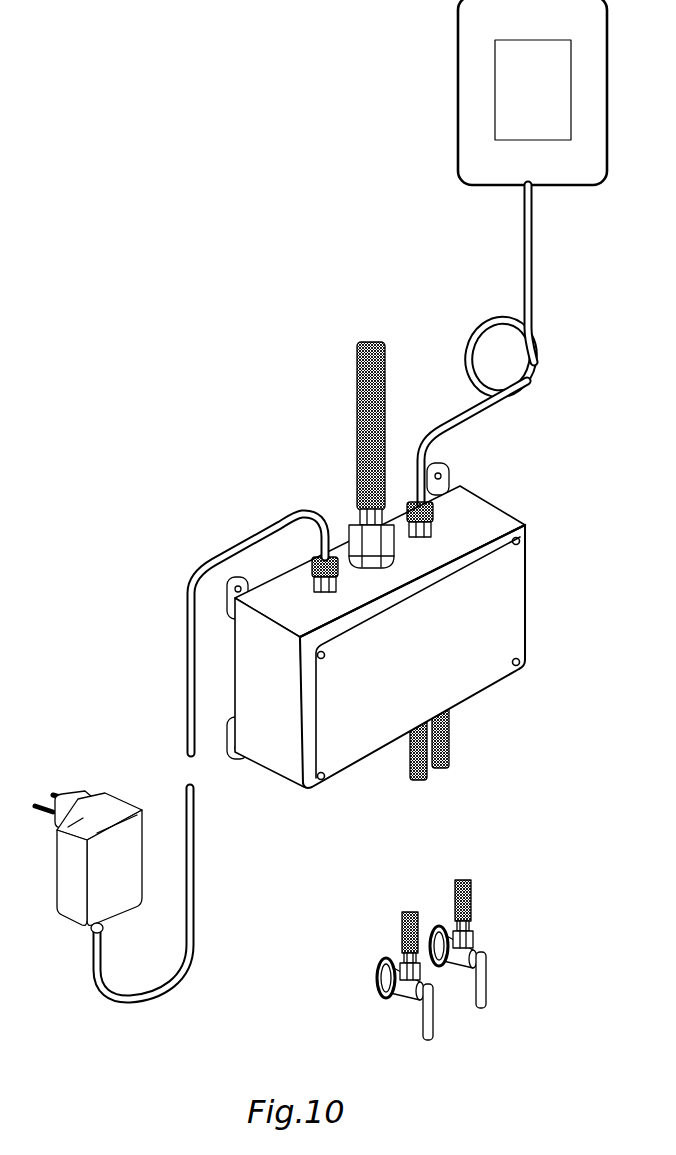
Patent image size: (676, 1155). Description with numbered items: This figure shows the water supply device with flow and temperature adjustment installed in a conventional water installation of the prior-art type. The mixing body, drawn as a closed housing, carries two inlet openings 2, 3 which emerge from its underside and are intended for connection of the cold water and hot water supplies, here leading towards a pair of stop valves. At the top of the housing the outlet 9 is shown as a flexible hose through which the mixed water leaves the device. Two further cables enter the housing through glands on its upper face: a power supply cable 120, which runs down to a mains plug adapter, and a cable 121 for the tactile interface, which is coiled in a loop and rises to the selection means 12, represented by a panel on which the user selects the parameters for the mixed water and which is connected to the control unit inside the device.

The selection means 12 is at (458, 73).
The cable for the tactile interface 121 is at (532, 383).
The outlet 9 is at (357, 378).
The power supply cable 120 is at (187, 617).
The inlet opening 2 is at (450, 731).
The inlet opening 3 is at (430, 773).